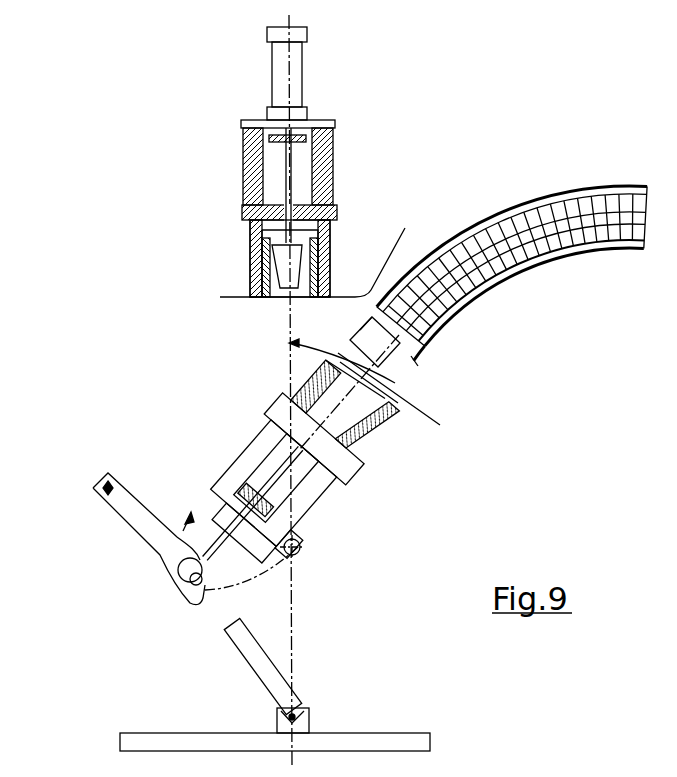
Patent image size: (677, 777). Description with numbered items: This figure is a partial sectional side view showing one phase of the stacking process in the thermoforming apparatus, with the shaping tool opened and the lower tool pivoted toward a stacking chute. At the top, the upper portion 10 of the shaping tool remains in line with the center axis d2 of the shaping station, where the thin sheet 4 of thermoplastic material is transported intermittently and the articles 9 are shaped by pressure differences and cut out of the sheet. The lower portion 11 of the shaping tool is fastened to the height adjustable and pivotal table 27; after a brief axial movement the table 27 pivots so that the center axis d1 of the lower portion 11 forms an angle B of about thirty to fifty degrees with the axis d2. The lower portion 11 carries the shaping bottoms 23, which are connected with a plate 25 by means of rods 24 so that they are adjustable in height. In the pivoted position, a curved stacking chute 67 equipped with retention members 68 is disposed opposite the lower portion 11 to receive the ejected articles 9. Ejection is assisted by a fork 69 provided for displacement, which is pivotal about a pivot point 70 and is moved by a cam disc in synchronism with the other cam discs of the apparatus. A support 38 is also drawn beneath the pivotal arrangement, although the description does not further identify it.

The thin sheet 4 is at (227, 297).
The articles 9 is at (413, 365).
The upper portion 10 is at (233, 252).
The lower portion 11 is at (380, 437).
The shaping bottoms 23 is at (362, 446).
The rods 24 is at (310, 493).
The plate 25 is at (303, 545).
The table 27 is at (270, 410).
The support strut 38 is at (275, 684).
The stacking chute 67 is at (497, 287).
The retention members 68 is at (425, 348).
The fork 69 is at (145, 523).
The pivot point 70 is at (103, 480).
The center axis of lower portion d1 is at (440, 425).
The center axis of shaping station d2 is at (289, 327).
The angle B is at (342, 354).